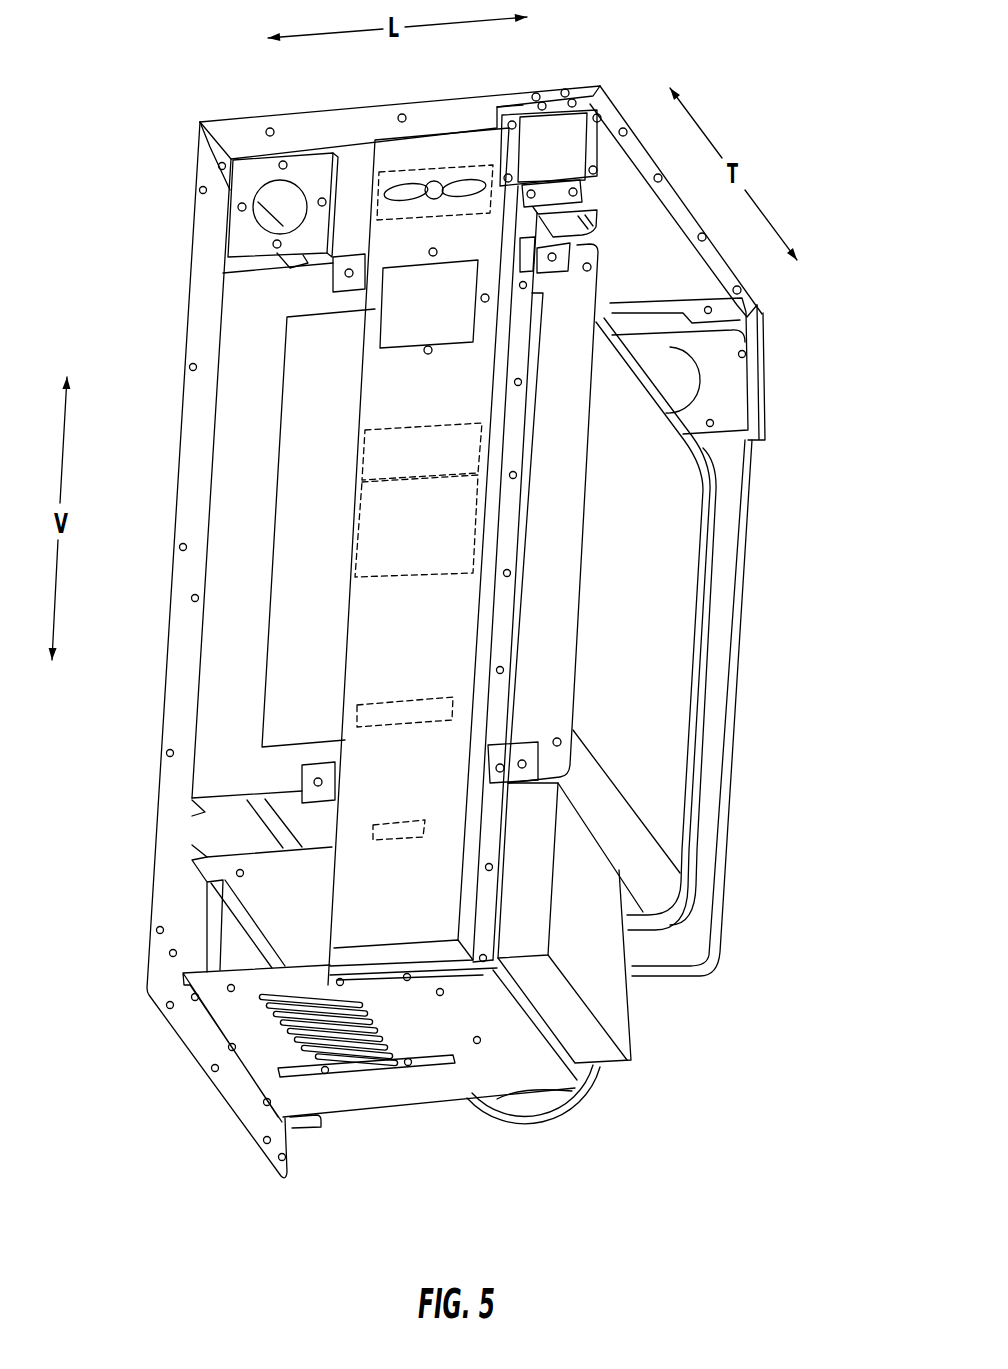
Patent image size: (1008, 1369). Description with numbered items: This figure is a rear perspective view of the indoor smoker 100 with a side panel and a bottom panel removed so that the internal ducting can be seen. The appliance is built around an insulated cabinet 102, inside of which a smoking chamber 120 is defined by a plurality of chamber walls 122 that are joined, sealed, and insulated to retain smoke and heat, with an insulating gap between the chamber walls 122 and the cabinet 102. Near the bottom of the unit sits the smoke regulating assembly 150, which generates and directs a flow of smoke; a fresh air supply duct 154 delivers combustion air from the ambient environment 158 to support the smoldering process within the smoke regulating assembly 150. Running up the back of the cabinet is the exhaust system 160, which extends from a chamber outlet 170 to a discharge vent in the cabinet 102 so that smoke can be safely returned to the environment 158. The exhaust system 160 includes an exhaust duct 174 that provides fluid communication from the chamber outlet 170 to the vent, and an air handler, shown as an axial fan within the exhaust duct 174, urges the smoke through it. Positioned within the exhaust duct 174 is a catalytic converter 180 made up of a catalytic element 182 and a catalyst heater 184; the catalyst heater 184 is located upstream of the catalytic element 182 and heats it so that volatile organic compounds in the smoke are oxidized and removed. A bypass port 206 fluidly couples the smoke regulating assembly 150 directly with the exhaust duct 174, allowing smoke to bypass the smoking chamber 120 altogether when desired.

The indoor smoker 100 is at (782, 75).
The insulated cabinet 102 is at (168, 588).
The smoking chamber 120 is at (634, 606).
The chamber walls 122 is at (680, 557).
The smoke regulating assembly 150 is at (548, 1132).
The fresh air supply duct 154 is at (403, 1043).
The ambient environment 158 is at (807, 1096).
The exhaust system 160 is at (358, 387).
The chamber outlet 170 is at (403, 700).
The exhaust duct 174 is at (460, 187).
The catalytic converter 180 is at (352, 421).
The catalytic element 182 is at (438, 466).
The catalyst heater 184 is at (435, 546).
The bypass port 206 is at (395, 823).